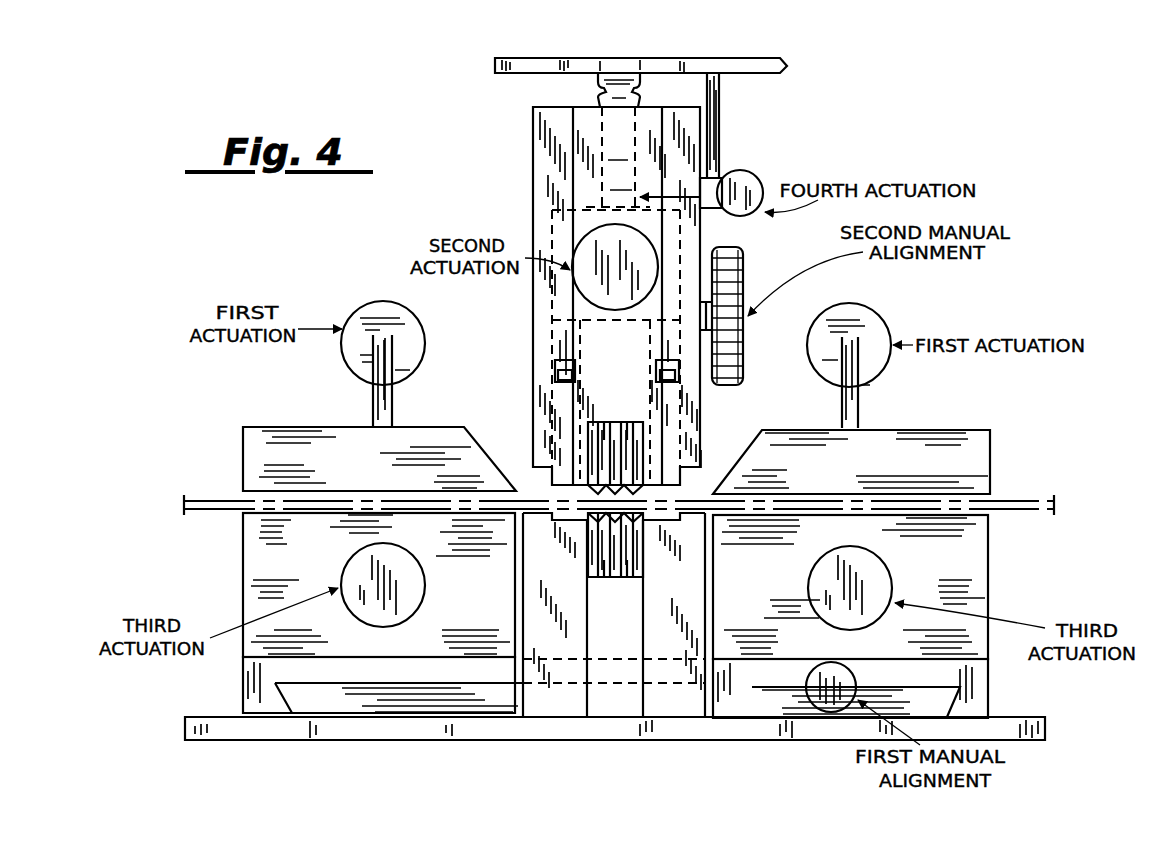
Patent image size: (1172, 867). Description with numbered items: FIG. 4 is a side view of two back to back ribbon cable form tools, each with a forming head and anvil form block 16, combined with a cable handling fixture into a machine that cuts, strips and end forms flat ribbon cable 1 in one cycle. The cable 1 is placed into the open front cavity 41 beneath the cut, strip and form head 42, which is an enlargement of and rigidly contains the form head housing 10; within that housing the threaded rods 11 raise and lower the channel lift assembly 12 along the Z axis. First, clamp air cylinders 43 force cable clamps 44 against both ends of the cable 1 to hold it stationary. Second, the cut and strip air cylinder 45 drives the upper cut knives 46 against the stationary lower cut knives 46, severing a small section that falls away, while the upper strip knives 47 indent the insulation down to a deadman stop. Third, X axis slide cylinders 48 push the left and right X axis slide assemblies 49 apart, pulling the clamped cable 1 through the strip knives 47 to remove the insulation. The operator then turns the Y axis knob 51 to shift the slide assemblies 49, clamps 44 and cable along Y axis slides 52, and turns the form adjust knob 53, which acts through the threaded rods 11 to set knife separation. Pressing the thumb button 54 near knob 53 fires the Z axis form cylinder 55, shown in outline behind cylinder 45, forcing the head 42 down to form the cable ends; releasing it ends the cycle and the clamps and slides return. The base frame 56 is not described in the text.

The ribbon cable 1 is at (1023, 508).
The form head housing 10 is at (703, 233).
The threaded rods 11 is at (555, 350).
The channel lift assembly 12 is at (555, 370).
The form block 16 is at (587, 697).
The open front cavity 41 is at (243, 488).
The cut, strip and form head 42 is at (648, 107).
The clamp air cylinders 43 is at (365, 305).
The cable clamps 44 is at (243, 427).
The cut and strip air cylinder 45 is at (582, 232).
The cut knives 46 is at (608, 420).
The strip knives 47 is at (590, 420).
The X axis slide cylinders 48 is at (343, 566).
The X axis slide assemblies 49 is at (243, 590).
The Y axis knob 51 is at (815, 706).
The Y axis slides 52 is at (243, 680).
The form adjust knob 53 is at (745, 262).
The thumb button 54 is at (748, 172).
The Z axis form cylinder 55 is at (598, 142).
The frame 56 is at (787, 62).